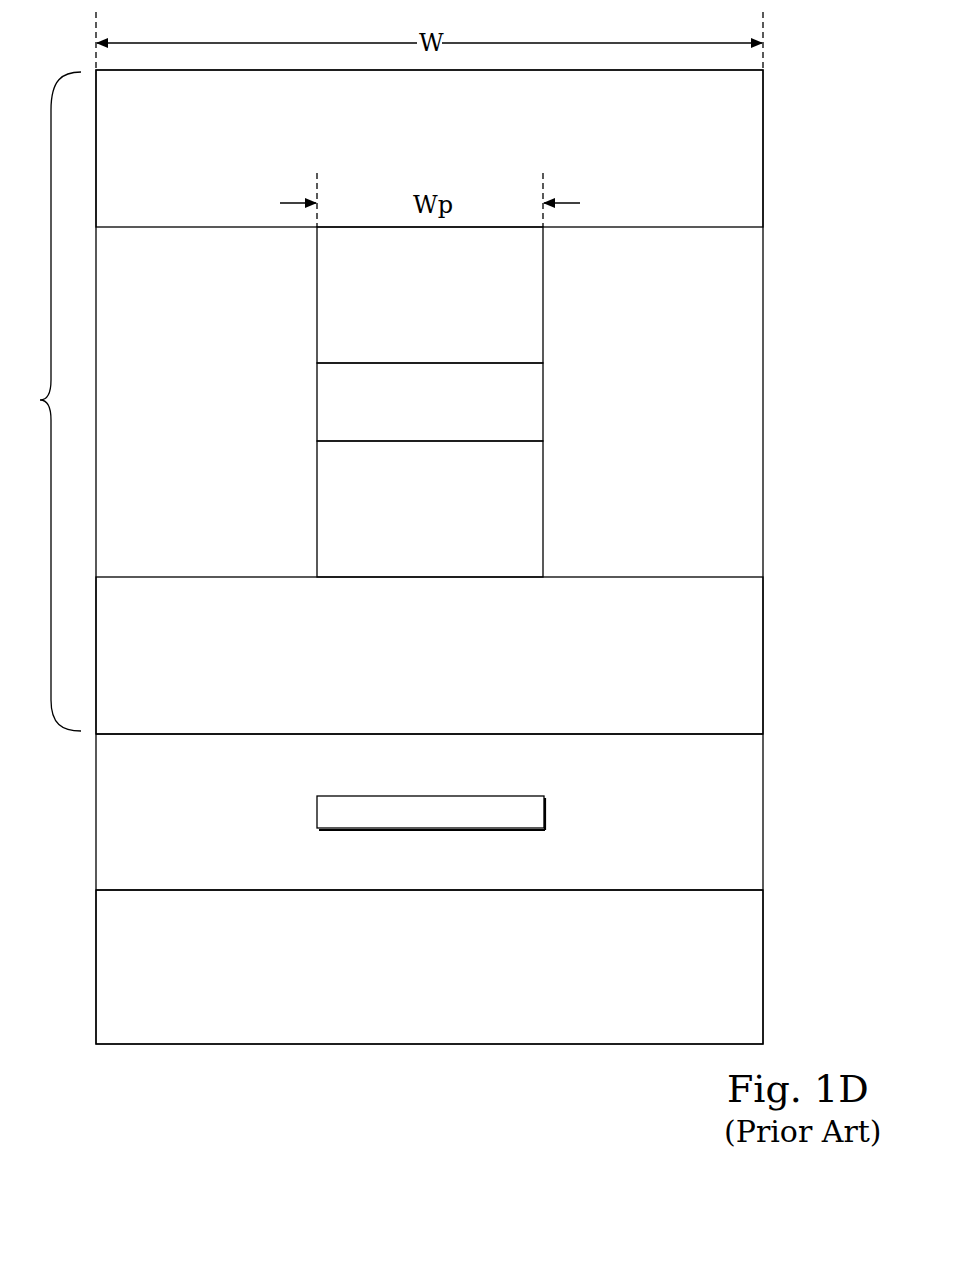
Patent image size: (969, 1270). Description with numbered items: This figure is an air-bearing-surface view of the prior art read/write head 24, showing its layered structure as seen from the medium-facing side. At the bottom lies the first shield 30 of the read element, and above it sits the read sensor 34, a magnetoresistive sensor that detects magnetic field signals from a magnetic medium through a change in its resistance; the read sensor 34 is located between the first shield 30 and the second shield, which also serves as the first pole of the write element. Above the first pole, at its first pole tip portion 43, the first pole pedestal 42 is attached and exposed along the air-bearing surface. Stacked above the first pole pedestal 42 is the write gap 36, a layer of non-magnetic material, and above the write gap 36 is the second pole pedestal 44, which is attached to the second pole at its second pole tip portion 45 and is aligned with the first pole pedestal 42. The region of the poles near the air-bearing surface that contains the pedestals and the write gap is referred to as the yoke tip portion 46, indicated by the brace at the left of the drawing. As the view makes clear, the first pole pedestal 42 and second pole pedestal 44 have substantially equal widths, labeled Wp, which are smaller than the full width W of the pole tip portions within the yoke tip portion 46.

The read/write head 24 is at (796, 182).
The first shield 30 is at (245, 979).
The read sensor 34 is at (443, 824).
The write gap 36 is at (443, 416).
The first pole pedestal 42 is at (443, 517).
The first pole tip portion 43 is at (245, 667).
The second pole pedestal 44 is at (443, 312).
The second pole tip portion 45 is at (685, 141).
The yoke tip portion 46 is at (46, 401).